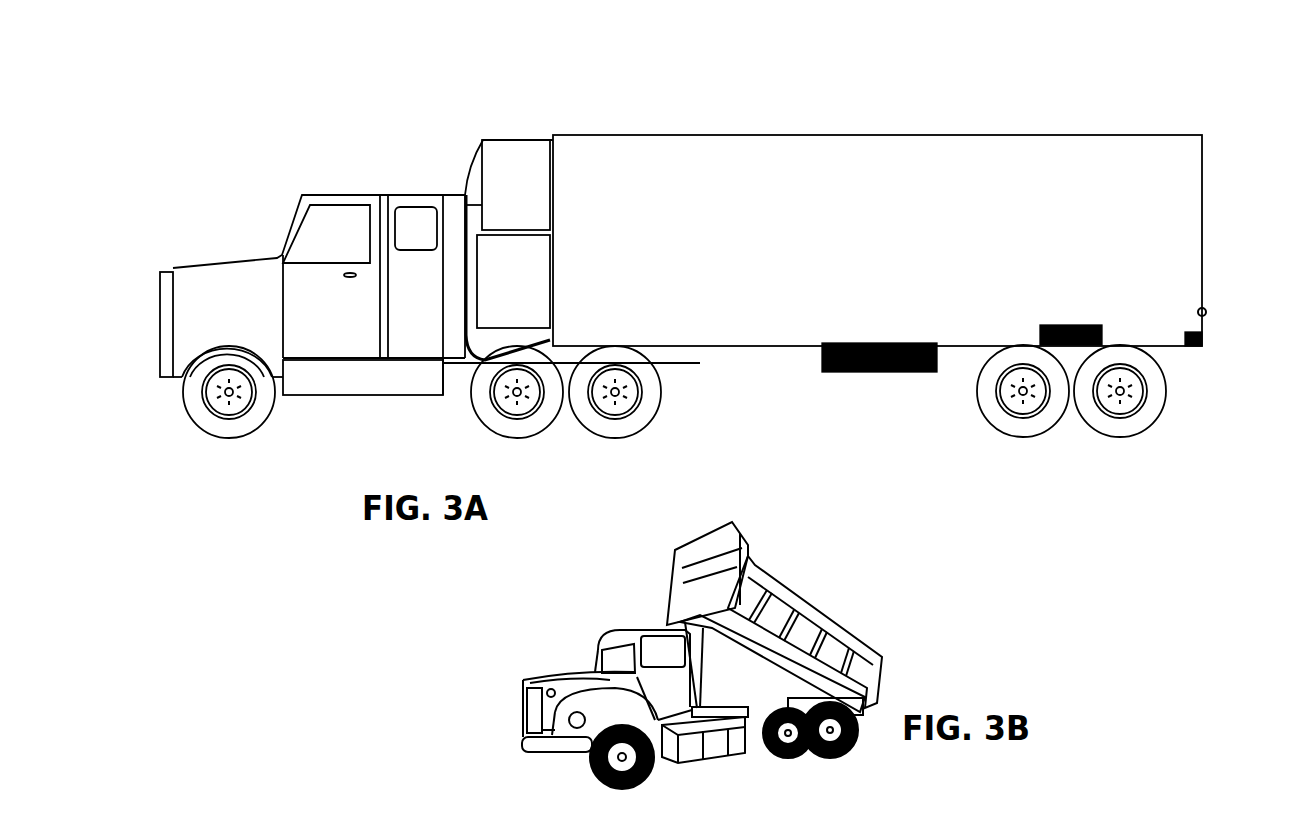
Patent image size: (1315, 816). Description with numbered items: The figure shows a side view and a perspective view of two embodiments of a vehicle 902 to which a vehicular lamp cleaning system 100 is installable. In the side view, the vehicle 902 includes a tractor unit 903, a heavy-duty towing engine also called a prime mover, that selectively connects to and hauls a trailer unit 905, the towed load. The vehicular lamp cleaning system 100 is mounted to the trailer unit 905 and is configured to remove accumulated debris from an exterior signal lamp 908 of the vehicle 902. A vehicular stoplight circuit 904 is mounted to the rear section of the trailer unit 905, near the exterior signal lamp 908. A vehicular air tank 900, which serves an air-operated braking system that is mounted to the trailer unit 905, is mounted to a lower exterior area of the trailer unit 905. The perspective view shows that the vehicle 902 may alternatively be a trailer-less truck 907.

In FIG. 3A, the vehicle 902 is at (732, 225).
In FIG. 3B, the vehicle 902 is at (783, 650).
In FIG. 3A, the tractor unit 903 is at (357, 197).
In FIG. 3A, the trailer unit 905 is at (1067, 135).
In FIG. 3A, the vehicular air tank 900 is at (878, 372).
In FIG. 3A, the vehicular lamp cleaning system 100 is at (1070, 325).
In FIG. 3A, the vehicular stoplight circuit 904 is at (1195, 332).
In FIG. 3A, the exterior signal lamp 908 is at (1207, 310).
In FIG. 3B, the trailer-less truck 907 is at (873, 652).